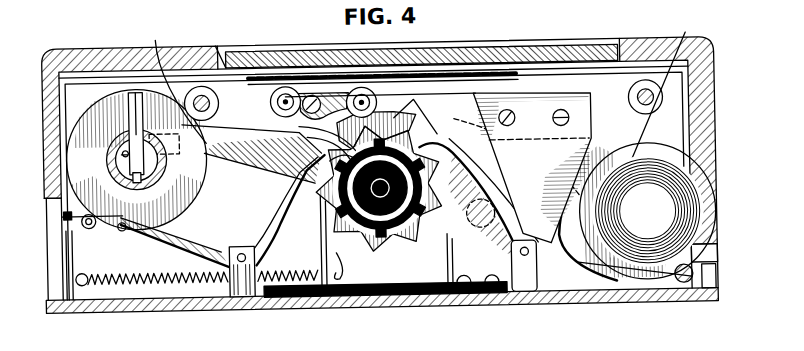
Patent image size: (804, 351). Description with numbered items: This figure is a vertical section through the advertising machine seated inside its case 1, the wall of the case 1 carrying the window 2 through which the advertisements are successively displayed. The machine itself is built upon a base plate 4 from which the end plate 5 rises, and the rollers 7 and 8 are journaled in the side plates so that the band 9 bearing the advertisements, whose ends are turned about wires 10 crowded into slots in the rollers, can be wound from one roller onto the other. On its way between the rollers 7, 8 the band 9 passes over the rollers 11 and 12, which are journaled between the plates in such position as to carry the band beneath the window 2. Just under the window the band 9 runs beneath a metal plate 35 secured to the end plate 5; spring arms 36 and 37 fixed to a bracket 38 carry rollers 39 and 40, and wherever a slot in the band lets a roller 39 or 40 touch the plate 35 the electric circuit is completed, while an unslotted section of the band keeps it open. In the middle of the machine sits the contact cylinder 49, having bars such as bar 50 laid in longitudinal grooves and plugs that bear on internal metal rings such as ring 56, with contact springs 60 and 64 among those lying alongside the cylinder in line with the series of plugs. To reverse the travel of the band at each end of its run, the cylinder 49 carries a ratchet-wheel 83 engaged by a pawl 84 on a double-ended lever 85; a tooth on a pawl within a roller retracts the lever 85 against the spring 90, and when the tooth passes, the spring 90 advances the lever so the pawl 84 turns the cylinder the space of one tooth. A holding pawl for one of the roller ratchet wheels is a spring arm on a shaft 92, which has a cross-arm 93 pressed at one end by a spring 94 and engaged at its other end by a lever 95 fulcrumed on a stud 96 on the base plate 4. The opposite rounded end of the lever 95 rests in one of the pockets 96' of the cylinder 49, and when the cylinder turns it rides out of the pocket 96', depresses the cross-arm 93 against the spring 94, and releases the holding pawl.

The case 1 is at (379, 156).
The window 2 is at (416, 39).
The base plate 4 is at (660, 307).
The end plate 5 is at (680, 108).
The roller 7 is at (716, 180).
The roller 8 is at (146, 168).
The band 9 is at (642, 145).
The wire 10 is at (112, 170).
The roller 11 is at (199, 96).
The roller 12 is at (660, 94).
The metal plate 35 is at (276, 74).
The spring arm 36 is at (388, 97).
The spring arm 37 is at (427, 96).
The bracket 38 is at (533, 167).
The roller 39 is at (295, 103).
The roller 40 is at (358, 88).
The contact cylinder 49 is at (344, 133).
The bar 50 is at (384, 256).
The metal ring 56 is at (320, 238).
The contact spring 60 is at (320, 255).
The contact spring 64 is at (452, 258).
The ratchet-wheel 83 is at (428, 130).
The pawl 84 is at (490, 222).
The double-ended lever 85 is at (252, 154).
The spring 90 is at (190, 282).
The shaft 92 is at (82, 214).
The cross-arm 93 is at (116, 230).
The spring 94 is at (72, 254).
The lever 95 is at (268, 222).
The stud 96 is at (242, 290).
The pocket 96' is at (367, 164).